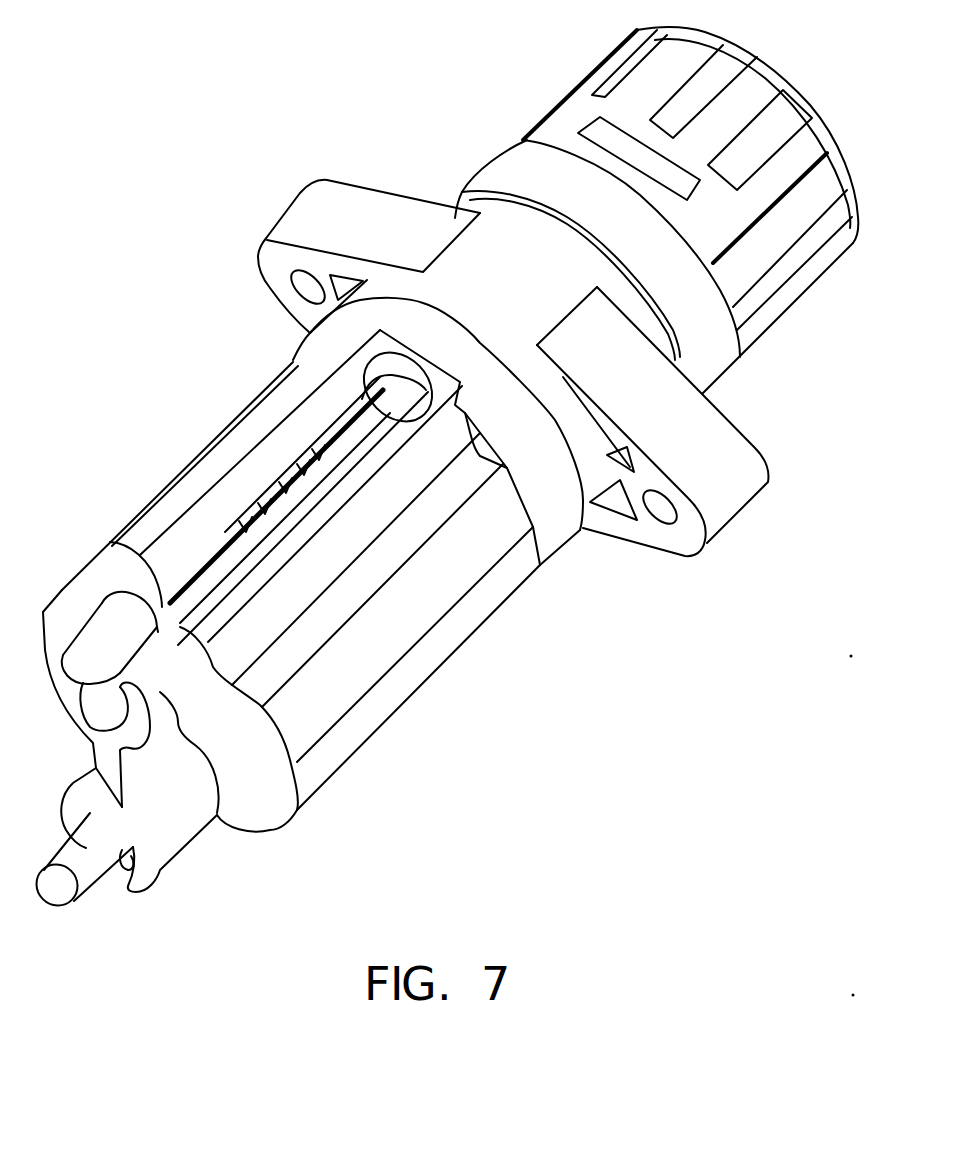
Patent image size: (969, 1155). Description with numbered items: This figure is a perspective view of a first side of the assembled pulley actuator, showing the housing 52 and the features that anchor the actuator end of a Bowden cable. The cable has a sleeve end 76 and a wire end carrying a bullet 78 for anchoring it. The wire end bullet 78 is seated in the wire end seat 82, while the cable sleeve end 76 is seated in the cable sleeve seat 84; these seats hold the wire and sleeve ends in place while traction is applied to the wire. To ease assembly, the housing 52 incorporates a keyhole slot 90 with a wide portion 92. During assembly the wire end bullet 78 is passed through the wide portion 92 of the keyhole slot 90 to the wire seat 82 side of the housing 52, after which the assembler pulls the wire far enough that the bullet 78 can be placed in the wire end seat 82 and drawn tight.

The housing 52 is at (433, 672).
The sleeve end 76 is at (58, 897).
The wire end bullet 78 is at (128, 657).
The wire end seat 82 is at (110, 542).
The cable sleeve seat 84 is at (127, 870).
The keyhole slot 90 is at (290, 492).
The wide portion 92 is at (406, 362).